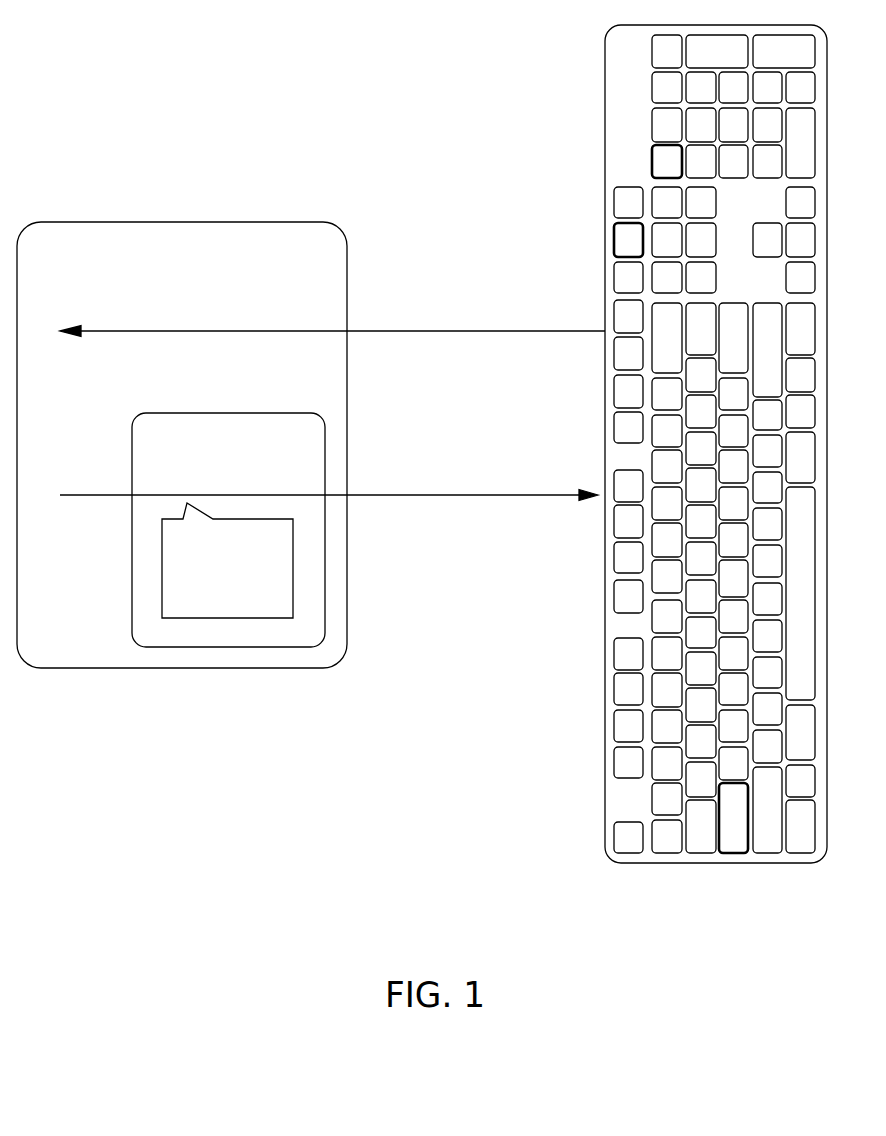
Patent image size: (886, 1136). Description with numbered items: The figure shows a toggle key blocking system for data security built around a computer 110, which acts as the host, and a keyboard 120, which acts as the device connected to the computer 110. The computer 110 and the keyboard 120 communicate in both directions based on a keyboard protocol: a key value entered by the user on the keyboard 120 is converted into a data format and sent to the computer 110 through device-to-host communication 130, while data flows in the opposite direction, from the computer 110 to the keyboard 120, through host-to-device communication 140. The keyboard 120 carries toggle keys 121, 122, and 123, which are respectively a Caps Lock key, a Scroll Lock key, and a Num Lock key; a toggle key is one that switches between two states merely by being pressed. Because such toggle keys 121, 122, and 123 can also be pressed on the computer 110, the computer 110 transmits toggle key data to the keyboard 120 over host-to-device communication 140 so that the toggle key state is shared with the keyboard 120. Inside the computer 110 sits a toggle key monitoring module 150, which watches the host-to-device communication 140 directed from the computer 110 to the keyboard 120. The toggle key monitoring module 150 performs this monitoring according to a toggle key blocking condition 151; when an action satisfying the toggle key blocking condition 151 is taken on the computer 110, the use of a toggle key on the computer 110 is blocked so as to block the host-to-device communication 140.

The computer 110 is at (182, 222).
The keyboard 120 is at (604, 757).
The toggle key 121 is at (734, 863).
The toggle key 122 is at (613, 238).
The toggle key 123 is at (651, 163).
The device-to-host communication 130 is at (485, 332).
The host-to-device communication 140 is at (497, 495).
The toggle key monitoring module 150 is at (325, 627).
The toggle key blocking condition 151 is at (227, 618).